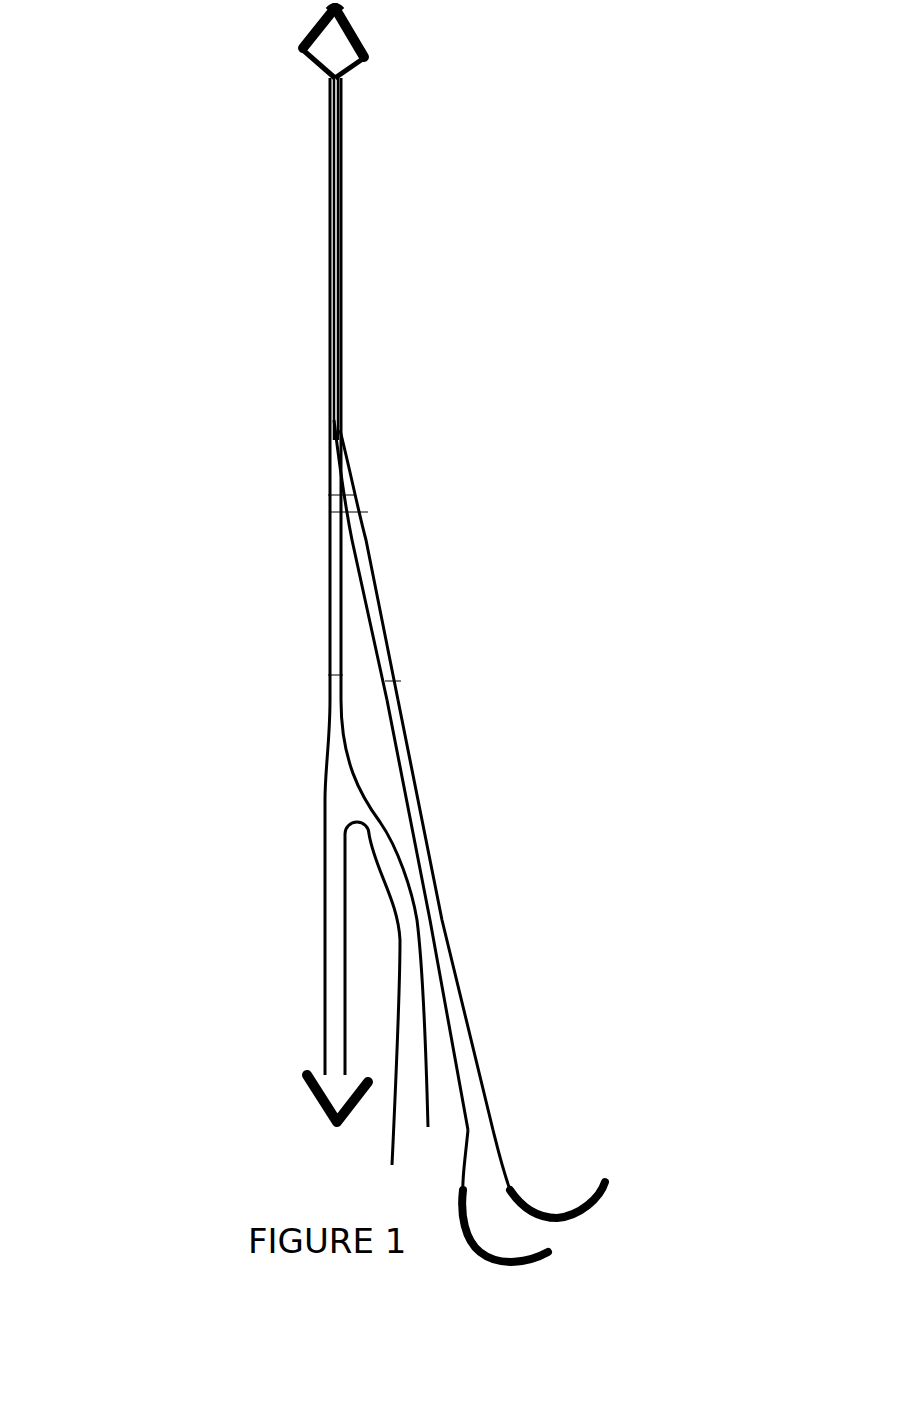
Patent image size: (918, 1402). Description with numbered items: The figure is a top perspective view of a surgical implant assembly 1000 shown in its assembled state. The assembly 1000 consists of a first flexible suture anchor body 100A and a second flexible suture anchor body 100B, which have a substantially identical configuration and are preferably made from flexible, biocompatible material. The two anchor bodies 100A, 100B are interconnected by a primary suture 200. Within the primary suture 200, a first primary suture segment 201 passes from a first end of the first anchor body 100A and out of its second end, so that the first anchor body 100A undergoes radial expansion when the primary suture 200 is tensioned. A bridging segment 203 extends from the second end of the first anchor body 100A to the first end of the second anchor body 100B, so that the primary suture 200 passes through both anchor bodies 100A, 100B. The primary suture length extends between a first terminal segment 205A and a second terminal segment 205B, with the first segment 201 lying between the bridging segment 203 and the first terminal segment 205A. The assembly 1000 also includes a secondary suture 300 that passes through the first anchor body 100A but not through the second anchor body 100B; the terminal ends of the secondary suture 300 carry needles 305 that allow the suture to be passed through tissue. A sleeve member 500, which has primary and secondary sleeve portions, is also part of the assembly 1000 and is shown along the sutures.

The surgical implant assembly 1000 is at (260, 565).
The first flexible suture anchor body 100A is at (298, 53).
The first primary suture segment 201 is at (345, 13).
The primary suture 200 is at (327, 912).
The bridging segment 203 is at (323, 807).
The sleeve member 500 is at (370, 570).
The secondary suture 300 is at (448, 937).
The first terminal segment 205A is at (425, 1105).
The second terminal segment 205B is at (395, 1085).
The needles 305 is at (510, 1260).
The second flexible suture anchor body 100B is at (313, 1103).